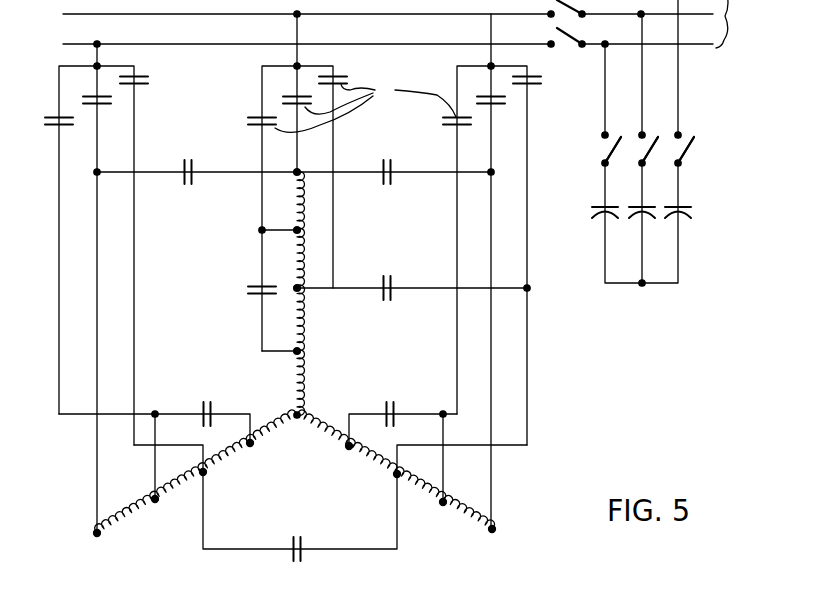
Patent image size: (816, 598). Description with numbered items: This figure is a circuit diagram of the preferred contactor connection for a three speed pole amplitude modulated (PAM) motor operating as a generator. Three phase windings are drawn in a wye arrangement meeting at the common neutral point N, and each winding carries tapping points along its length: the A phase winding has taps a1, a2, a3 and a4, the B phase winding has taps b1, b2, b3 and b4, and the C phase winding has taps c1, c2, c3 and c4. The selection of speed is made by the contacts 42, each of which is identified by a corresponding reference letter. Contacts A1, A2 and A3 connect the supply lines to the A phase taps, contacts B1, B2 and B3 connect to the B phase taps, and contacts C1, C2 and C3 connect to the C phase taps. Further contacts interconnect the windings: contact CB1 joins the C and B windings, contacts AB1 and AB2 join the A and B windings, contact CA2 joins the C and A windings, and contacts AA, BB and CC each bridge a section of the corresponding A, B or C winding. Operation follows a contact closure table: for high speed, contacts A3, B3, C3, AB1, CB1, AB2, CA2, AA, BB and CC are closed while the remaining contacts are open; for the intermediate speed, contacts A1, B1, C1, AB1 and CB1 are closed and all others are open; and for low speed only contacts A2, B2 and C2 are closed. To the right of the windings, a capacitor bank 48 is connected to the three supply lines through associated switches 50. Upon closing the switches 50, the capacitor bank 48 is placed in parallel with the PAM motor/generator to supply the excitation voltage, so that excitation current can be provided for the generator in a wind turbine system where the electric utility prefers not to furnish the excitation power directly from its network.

The contacts 42 is at (365, 106).
The capacitor bank 48 is at (690, 213).
The switches 50 is at (690, 151).
The contact A1 is at (543, 81).
The contact A2 is at (506, 105).
The contact A3 is at (472, 124).
The contact B1 is at (346, 82).
The contact B2 is at (283, 98).
The contact B3 is at (249, 125).
The contact C1 is at (150, 81).
The contact C2 is at (112, 104).
The contact C3 is at (75, 125).
The contact CB1 is at (192, 184).
The contact AB1 is at (391, 185).
The contact AB2 is at (391, 277).
The contact BB is at (252, 288).
The contact CC is at (206, 403).
The contact AA is at (389, 404).
The contact CA2 is at (300, 537).
The neutral point of wye-connected windings N is at (297, 420).
The phase B winding tap b1 is at (300, 174).
The phase B winding tap b2 is at (300, 232).
The phase B winding tap b3 is at (300, 290).
The phase B winding tap b4 is at (300, 353).
The phase C winding tap c1 is at (100, 535).
The phase C winding tap c2 is at (157, 502).
The phase C winding tap c3 is at (205, 475).
The phase C winding tap c4 is at (251, 446).
The phase A winding tap a1 is at (492, 532).
The phase A winding tap a2 is at (443, 505).
The phase A winding tap a3 is at (395, 477).
The phase A winding tap a4 is at (348, 449).